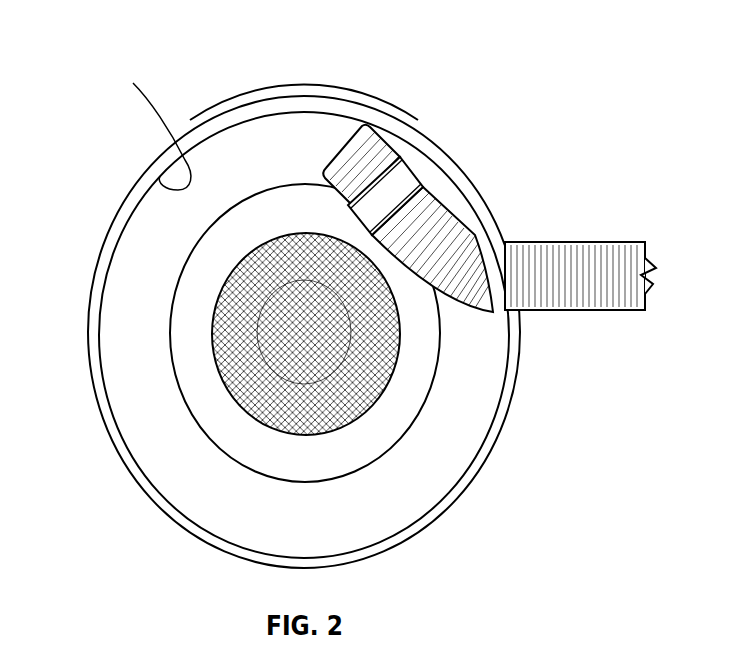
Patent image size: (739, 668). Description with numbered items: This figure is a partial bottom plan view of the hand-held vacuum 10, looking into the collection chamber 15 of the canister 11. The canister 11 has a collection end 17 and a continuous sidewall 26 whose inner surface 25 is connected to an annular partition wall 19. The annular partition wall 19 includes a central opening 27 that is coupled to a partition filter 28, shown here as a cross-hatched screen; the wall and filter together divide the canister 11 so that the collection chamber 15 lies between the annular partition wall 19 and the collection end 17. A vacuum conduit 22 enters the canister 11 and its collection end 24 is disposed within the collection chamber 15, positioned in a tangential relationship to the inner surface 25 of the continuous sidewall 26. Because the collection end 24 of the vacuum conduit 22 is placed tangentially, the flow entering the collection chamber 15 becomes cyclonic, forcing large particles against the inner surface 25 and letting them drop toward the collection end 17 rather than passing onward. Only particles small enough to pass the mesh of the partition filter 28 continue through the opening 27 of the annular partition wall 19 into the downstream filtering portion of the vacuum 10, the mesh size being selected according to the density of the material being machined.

The hand-held vacuum 10 is at (490, 42).
The canister 11 is at (104, 223).
The collection chamber 15 is at (470, 407).
The collection end 17 is at (97, 318).
The annular partition wall 19 is at (305, 333).
The vacuum conduit 22 is at (588, 239).
The collection end 24 is at (375, 133).
The inner surface 25 is at (149, 130).
The continuous sidewall 26 is at (219, 104).
The opening 27 is at (224, 349).
The partition filter 28 is at (324, 416).